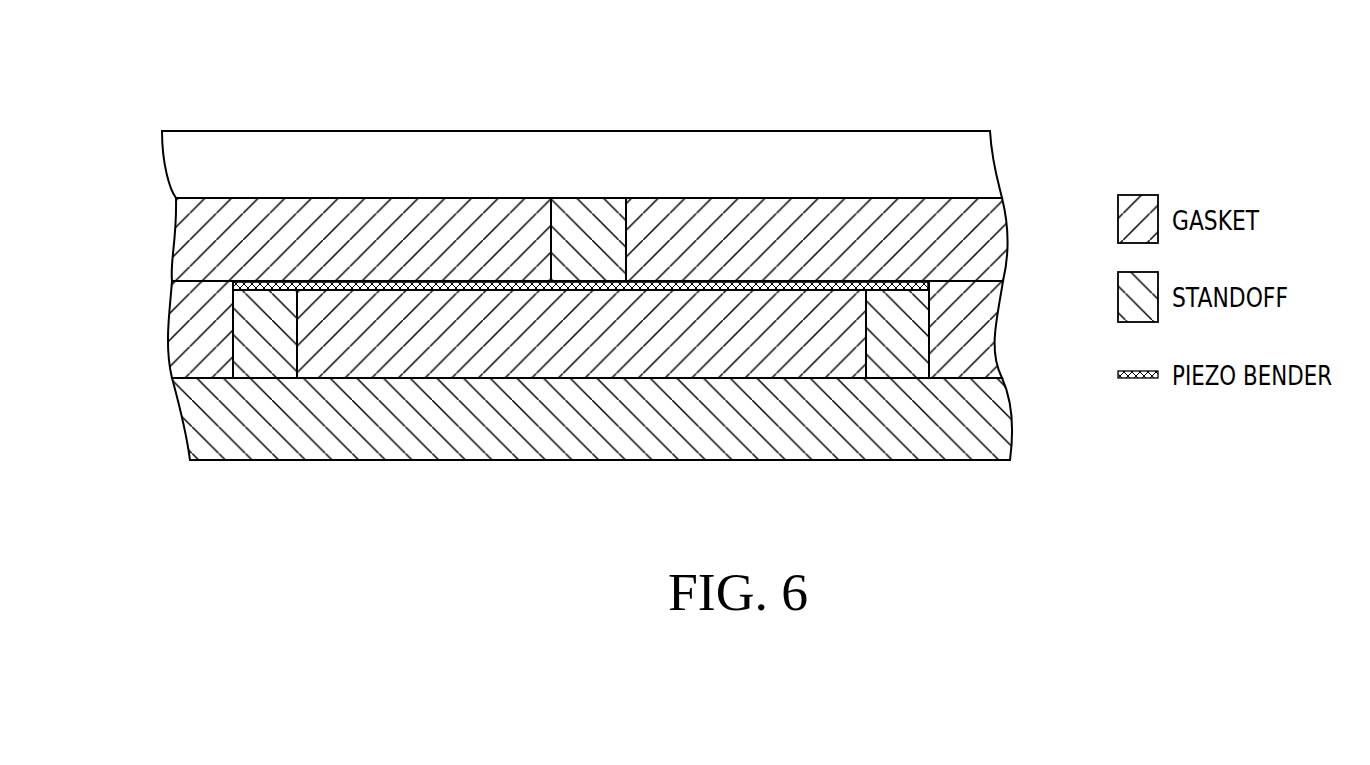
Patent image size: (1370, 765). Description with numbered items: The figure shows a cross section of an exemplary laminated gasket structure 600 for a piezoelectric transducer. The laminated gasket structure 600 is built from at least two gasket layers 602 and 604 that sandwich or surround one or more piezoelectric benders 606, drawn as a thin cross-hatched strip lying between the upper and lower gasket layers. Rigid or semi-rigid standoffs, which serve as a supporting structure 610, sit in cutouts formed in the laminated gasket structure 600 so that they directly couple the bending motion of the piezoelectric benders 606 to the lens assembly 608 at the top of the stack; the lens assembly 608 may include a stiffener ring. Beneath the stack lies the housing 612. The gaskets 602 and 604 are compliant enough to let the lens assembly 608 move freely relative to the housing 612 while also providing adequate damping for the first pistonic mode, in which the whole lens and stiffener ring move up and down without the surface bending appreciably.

The laminated gasket structure 600 is at (990, 77).
The gasket layer 602 is at (177, 244).
The gasket layer 604 is at (168, 304).
The piezoelectric bender 606 is at (765, 312).
The lens assembly 608 is at (663, 130).
The supporting structure 610 is at (257, 352).
The housing 612 is at (307, 461).